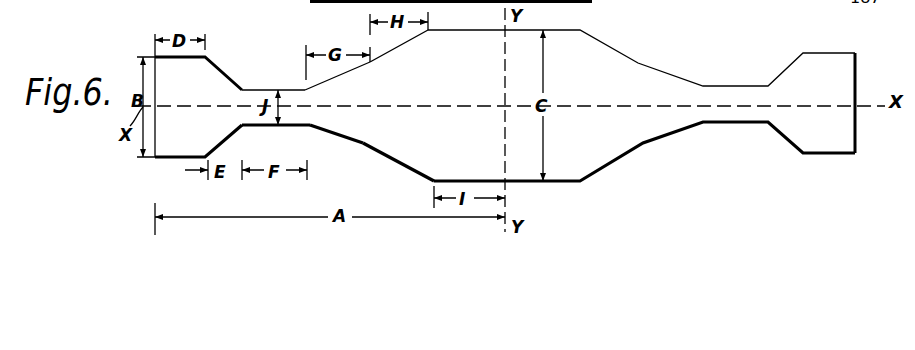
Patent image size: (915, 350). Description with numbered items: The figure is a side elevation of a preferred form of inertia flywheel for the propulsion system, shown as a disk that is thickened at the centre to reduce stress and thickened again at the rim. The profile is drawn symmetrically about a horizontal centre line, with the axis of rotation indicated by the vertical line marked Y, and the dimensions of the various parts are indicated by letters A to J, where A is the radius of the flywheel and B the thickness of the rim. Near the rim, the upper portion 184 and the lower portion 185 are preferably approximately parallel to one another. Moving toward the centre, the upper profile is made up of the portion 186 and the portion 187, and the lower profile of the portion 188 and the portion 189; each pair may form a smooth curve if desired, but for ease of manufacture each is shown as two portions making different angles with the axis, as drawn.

The flywheel portion 184 is at (242, 91).
The flywheel portion 185 is at (242, 124).
The flywheel portion 186 is at (358, 67).
The flywheel portion 187 is at (410, 40).
The flywheel portion 188 is at (365, 143).
The flywheel portion 189 is at (420, 175).